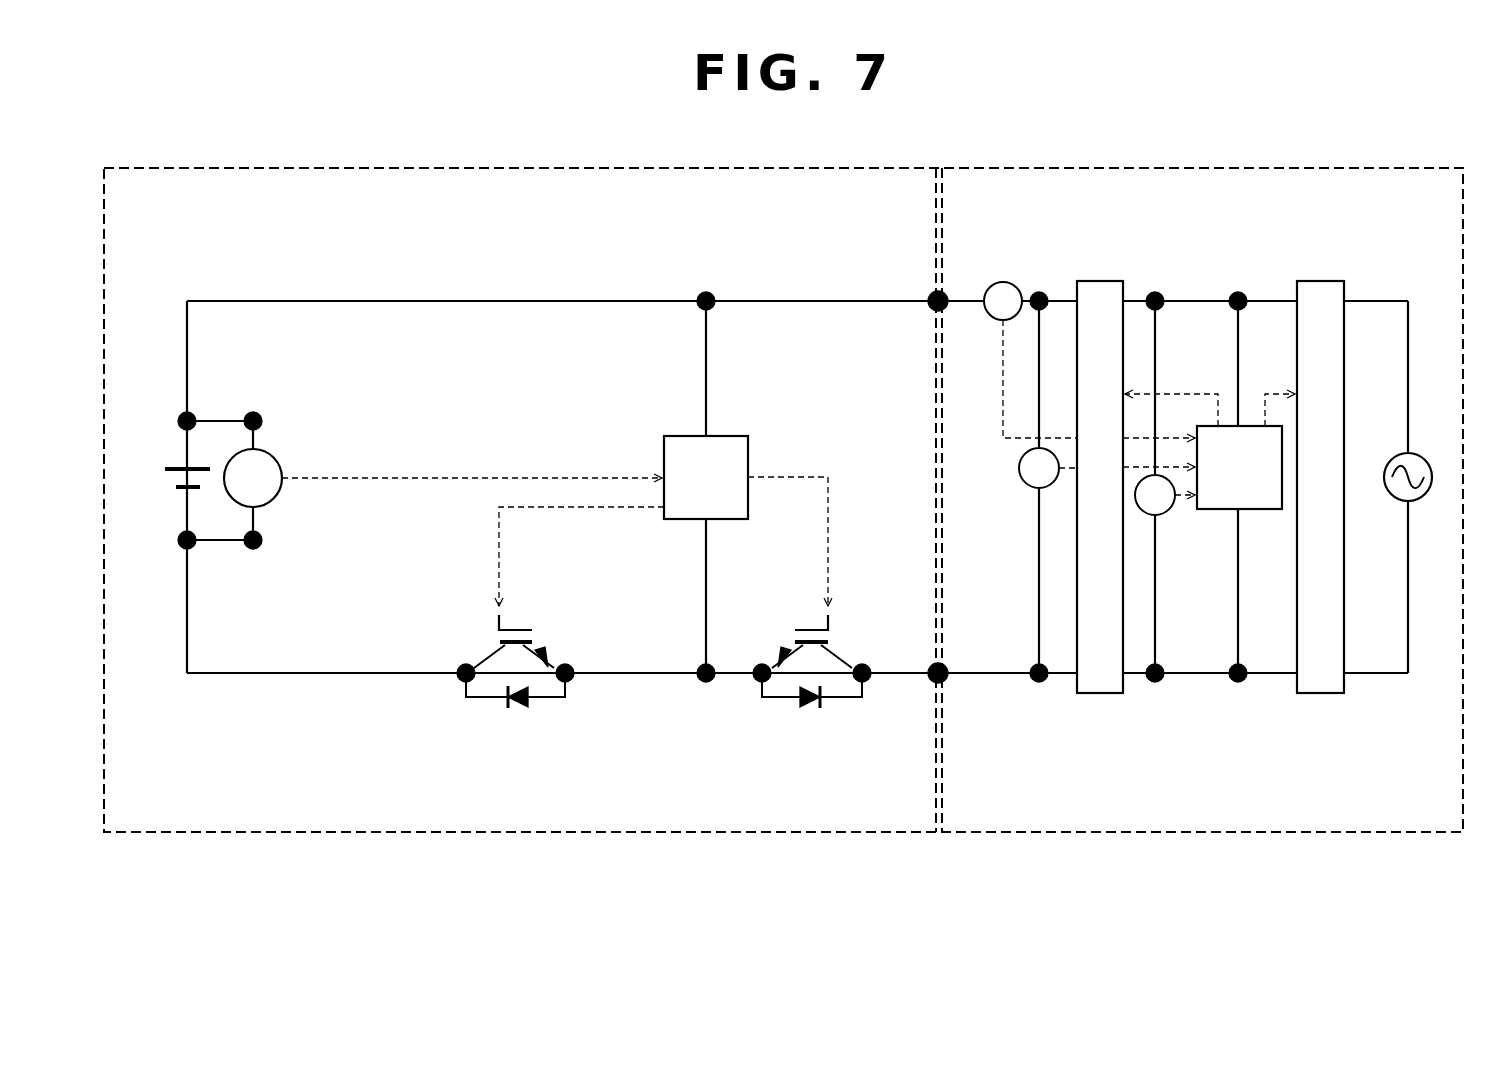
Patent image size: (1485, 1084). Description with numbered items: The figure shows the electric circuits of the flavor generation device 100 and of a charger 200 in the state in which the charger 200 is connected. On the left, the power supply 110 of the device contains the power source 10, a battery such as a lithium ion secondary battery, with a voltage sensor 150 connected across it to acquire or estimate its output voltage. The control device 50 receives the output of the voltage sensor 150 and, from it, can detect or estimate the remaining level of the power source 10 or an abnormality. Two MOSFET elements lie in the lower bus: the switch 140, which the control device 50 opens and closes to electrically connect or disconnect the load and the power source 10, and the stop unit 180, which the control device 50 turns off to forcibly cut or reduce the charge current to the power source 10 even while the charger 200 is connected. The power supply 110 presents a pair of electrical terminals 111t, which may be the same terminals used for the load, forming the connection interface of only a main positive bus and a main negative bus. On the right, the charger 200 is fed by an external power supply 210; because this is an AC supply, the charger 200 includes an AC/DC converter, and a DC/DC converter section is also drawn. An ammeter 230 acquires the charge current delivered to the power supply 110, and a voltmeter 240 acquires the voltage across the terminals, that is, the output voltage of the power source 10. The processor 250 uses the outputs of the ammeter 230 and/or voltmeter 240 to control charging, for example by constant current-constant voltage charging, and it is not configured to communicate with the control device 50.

The flavor generation device 100 is at (243, 147).
The power supply 110 is at (655, 833).
The charger 200 is at (1313, 838).
The power source 10 is at (158, 462).
The voltage sensor 150 is at (268, 450).
The control device 50 is at (677, 436).
The stop unit 180 is at (518, 720).
The switch 140 is at (836, 700).
The electrical terminals 111t is at (930, 297).
The ammeter 230 is at (1005, 282).
The voltmeter 240 is at (1025, 486).
The processor 250 is at (1227, 426).
The external power supply 210 is at (1425, 455).